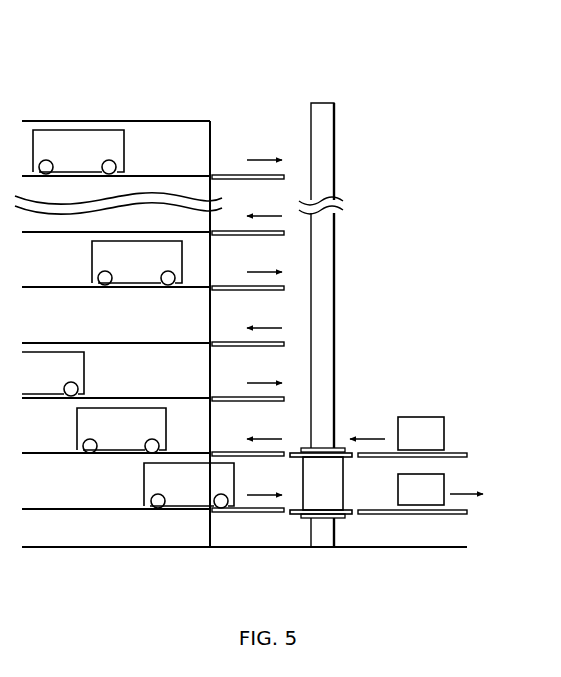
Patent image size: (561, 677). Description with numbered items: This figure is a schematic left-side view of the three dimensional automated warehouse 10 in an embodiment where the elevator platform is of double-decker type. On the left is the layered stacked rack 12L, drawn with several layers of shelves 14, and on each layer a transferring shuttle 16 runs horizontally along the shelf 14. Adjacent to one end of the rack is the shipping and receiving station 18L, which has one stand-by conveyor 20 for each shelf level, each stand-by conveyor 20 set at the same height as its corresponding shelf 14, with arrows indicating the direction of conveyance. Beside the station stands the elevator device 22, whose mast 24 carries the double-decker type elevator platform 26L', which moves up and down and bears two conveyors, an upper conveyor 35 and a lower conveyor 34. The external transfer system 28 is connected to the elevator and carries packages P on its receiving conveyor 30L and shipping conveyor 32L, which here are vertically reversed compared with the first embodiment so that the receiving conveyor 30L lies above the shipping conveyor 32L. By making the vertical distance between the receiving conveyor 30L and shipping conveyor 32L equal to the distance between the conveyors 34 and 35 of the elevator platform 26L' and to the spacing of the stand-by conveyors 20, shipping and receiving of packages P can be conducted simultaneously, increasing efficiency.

The three dimensional automated warehouse 10 is at (306, 72).
The layered stacked rack 12L is at (201, 116).
The shelf 14 is at (157, 342).
The transferring shuttle 16 is at (98, 128).
The shipping and receiving station 18L is at (245, 134).
The stand-by conveyor 20 is at (283, 235).
The elevator device 22 is at (338, 137).
The mast 24 is at (330, 167).
The double-decker type elevator platform 26L' is at (354, 521).
The external transfer system 28 is at (424, 371).
The package P is at (421, 430).
The receiving conveyor 30L is at (457, 458).
The shipping conveyor 32L is at (457, 515).
The conveyor 34 is at (349, 508).
The conveyor 35 is at (349, 451).